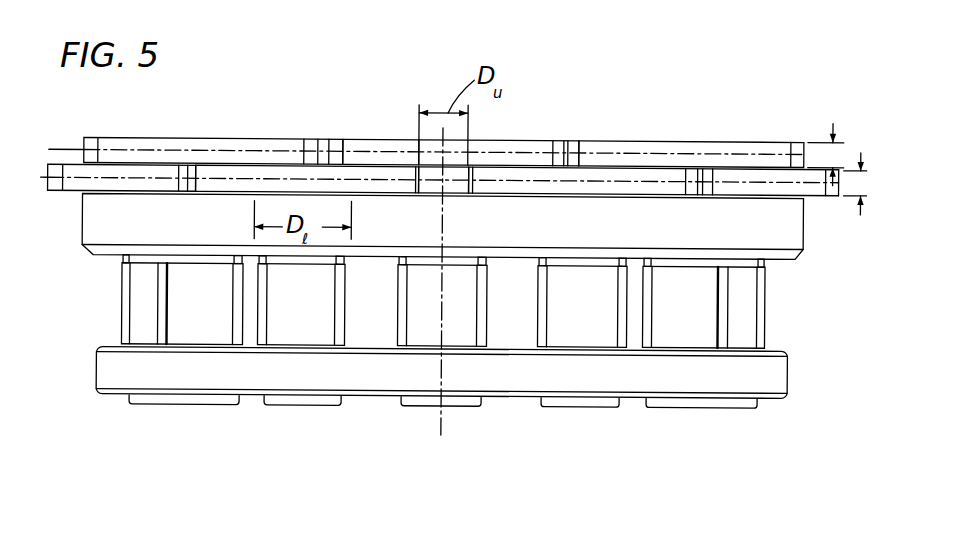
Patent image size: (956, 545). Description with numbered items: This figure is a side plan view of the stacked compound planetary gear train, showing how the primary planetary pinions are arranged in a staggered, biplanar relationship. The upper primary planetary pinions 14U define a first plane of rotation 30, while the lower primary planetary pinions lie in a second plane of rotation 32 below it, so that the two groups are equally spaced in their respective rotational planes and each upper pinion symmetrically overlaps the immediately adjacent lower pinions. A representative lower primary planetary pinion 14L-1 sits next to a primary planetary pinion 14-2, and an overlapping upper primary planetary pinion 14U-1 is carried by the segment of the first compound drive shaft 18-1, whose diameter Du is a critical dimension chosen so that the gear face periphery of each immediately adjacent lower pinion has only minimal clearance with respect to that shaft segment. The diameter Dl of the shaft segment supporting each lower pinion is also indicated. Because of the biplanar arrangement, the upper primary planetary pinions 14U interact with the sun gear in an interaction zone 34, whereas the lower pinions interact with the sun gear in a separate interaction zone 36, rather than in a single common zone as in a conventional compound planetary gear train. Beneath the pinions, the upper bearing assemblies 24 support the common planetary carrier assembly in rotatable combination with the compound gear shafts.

The first plane of rotation 30 is at (62, 150).
The second plane of rotation 32 is at (41, 181).
The primary planetary pinion 14-2 is at (266, 172).
The upper primary planetary pinion 14U-1 is at (366, 140).
The upper primary planetary pinions 14U is at (632, 137).
The lower primary planetary pinion 14L-1 is at (670, 174).
The first compound drive shaft segment 18-1 is at (468, 173).
The upper bearing assemblies 24 is at (143, 303).
The interaction zone 34 is at (837, 155).
The interaction zone 36 is at (866, 186).